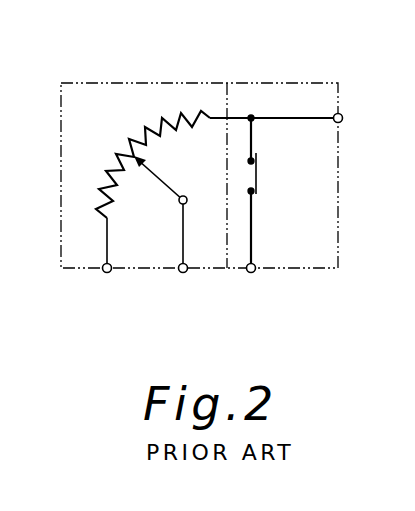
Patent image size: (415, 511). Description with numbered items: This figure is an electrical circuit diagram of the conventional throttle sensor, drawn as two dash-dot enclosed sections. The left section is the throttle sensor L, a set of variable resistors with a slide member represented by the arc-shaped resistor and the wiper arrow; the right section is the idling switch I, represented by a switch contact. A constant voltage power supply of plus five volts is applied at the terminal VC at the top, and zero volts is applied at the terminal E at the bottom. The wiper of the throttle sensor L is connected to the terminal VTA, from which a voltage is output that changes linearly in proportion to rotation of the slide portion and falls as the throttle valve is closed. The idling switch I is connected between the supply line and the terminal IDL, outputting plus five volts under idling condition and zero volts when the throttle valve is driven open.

The throttle sensor L is at (122, 115).
The idling switch I is at (258, 178).
The terminal Vc VC is at (362, 133).
The terminal E is at (110, 296).
The terminal VTA is at (189, 284).
The terminal IDL is at (258, 284).